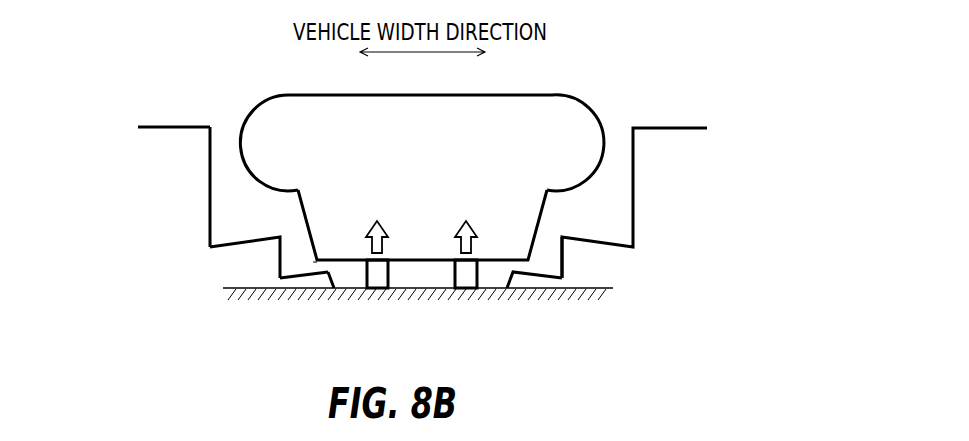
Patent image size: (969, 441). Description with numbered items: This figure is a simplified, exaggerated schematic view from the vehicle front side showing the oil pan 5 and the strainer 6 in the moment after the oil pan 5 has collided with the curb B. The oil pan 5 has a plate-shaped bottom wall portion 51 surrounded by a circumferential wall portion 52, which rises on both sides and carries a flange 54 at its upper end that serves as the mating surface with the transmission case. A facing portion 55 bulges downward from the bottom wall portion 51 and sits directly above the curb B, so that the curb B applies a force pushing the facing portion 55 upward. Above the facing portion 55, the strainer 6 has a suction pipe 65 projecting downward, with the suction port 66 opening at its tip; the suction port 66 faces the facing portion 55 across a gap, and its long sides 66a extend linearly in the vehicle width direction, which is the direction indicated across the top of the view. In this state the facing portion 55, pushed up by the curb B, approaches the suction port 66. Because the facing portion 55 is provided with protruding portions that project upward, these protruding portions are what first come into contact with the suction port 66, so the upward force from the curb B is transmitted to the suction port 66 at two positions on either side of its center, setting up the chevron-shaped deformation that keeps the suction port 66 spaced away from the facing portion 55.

The strainer 6 is at (447, 148).
The suction pipe 65 is at (538, 218).
The oil pan 5 is at (380, 248).
The flange 54 is at (156, 130).
The circumferential wall portion 52 is at (210, 226).
The bottom wall portion 51 is at (296, 280).
The facing portion 55 is at (326, 284).
The suction port 66 is at (315, 266).
The long sides 66a is at (509, 283).
The curb B is at (600, 288).